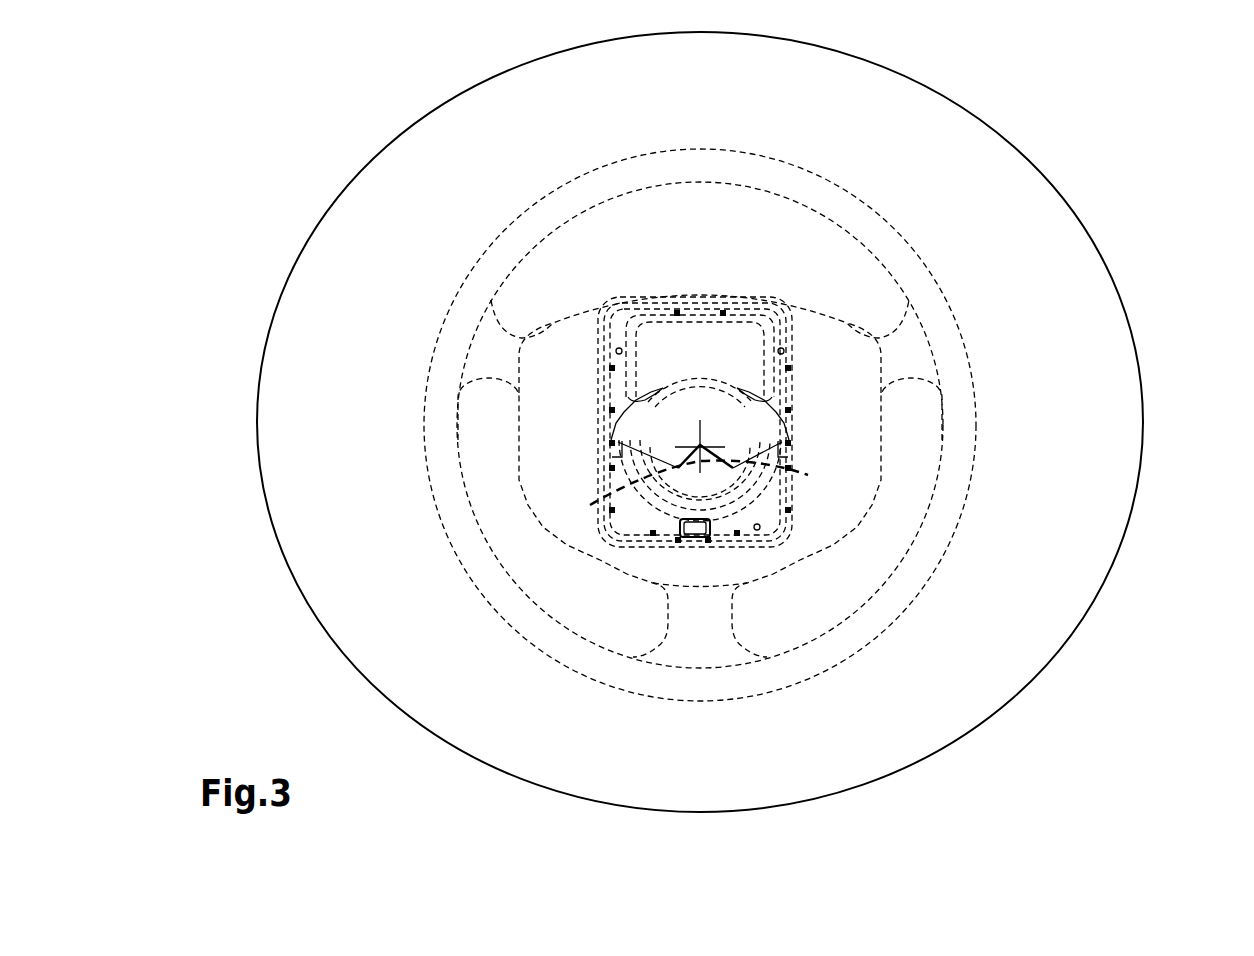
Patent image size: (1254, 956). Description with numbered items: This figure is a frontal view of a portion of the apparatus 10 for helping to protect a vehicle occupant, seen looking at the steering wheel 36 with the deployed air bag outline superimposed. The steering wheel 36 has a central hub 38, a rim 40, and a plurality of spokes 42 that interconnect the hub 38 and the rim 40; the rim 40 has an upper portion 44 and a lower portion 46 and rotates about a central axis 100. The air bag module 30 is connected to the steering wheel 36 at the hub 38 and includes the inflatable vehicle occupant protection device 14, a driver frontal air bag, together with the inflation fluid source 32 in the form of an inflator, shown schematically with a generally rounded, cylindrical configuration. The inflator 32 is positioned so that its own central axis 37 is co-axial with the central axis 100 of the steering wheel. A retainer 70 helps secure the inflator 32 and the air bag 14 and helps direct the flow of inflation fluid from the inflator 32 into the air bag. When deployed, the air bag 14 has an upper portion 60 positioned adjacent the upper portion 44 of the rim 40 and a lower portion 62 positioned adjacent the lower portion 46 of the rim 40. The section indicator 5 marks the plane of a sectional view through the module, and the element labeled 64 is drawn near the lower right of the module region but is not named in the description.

The apparatus 10 is at (305, 92).
The inflatable vehicle occupant protection device 14 is at (1110, 335).
The air bag module 30 is at (592, 372).
The inflation fluid source 32 is at (670, 418).
The steering wheel 36 is at (426, 405).
The central axis of the inflator 37 is at (792, 473).
The central hub 38 is at (545, 453).
The rim 40 is at (850, 197).
The spokes 42 is at (492, 350).
The upper portion of the rim 44 is at (568, 190).
The lower portion of the rim 46 is at (563, 657).
The upper portion of the air bag 60 is at (995, 157).
The lower portion of the air bag 62 is at (892, 742).
The cover side wall 64 is at (802, 538).
The retainer 70 is at (752, 330).
The central axis of the steering wheel 100 is at (606, 502).
The section line 5- 5 is at (700, 297).